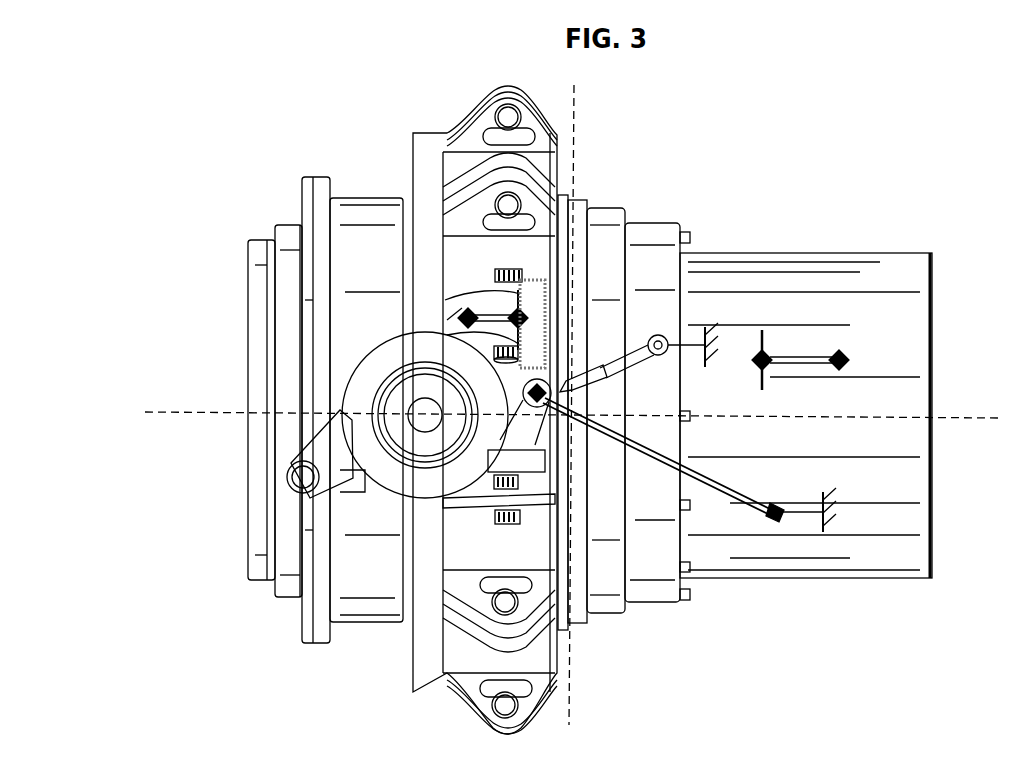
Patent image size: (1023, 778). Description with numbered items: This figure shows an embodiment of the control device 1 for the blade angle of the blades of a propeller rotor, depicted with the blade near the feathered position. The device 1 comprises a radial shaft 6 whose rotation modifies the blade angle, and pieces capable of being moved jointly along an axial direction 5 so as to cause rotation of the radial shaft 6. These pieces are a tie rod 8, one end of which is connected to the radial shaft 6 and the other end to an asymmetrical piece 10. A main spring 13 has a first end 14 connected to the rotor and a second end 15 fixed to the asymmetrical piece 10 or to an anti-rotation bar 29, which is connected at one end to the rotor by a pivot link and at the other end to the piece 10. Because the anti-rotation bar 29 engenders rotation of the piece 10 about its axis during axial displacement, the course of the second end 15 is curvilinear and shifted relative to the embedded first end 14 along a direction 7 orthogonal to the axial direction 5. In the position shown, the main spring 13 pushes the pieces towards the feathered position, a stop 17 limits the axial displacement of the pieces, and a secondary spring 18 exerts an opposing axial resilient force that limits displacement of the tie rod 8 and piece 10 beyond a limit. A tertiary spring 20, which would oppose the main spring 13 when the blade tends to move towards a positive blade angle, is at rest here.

The control device 1 is at (700, 431).
The axial direction 5 is at (968, 408).
The radial shaft 6 is at (411, 385).
The direction orthogonal to the axial direction 7 is at (578, 655).
The tie rod 8 is at (360, 497).
The asymmetrical piece 10 is at (497, 254).
The main spring 13 is at (712, 491).
The first end of the main spring 14 is at (782, 528).
The second end of the main spring 15 is at (531, 407).
The stop 17 is at (553, 306).
The secondary spring 18 is at (488, 306).
The tertiary spring 20 is at (800, 354).
The anti-rotation bar 29 is at (608, 352).